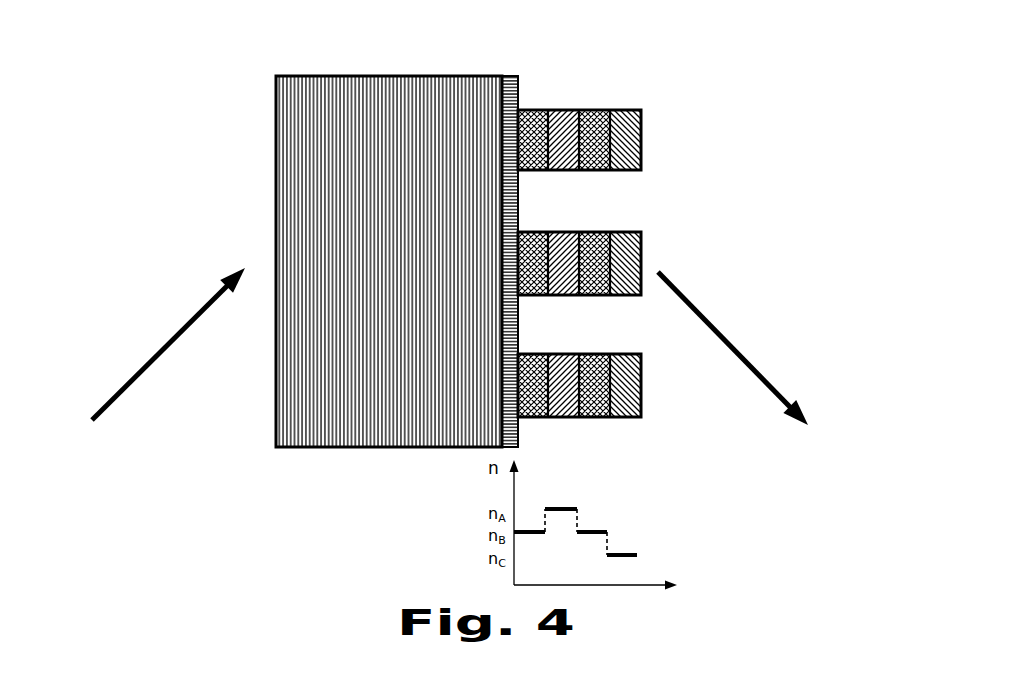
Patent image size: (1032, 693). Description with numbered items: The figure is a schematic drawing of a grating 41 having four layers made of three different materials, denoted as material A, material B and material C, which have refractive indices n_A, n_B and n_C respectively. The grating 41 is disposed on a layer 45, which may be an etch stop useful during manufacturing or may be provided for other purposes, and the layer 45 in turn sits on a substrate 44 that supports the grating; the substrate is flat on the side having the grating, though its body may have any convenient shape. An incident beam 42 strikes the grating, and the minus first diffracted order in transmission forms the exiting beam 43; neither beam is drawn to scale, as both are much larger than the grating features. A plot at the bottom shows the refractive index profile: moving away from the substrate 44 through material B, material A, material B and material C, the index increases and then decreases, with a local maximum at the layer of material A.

The grating 41 is at (703, 263).
The incident beam 42 is at (157, 350).
The exiting beam 43 is at (683, 293).
The substrate 44 is at (273, 207).
The layer 45 is at (520, 92).
The material A is at (563, 296).
The material B is at (537, 172).
The material C is at (642, 135).